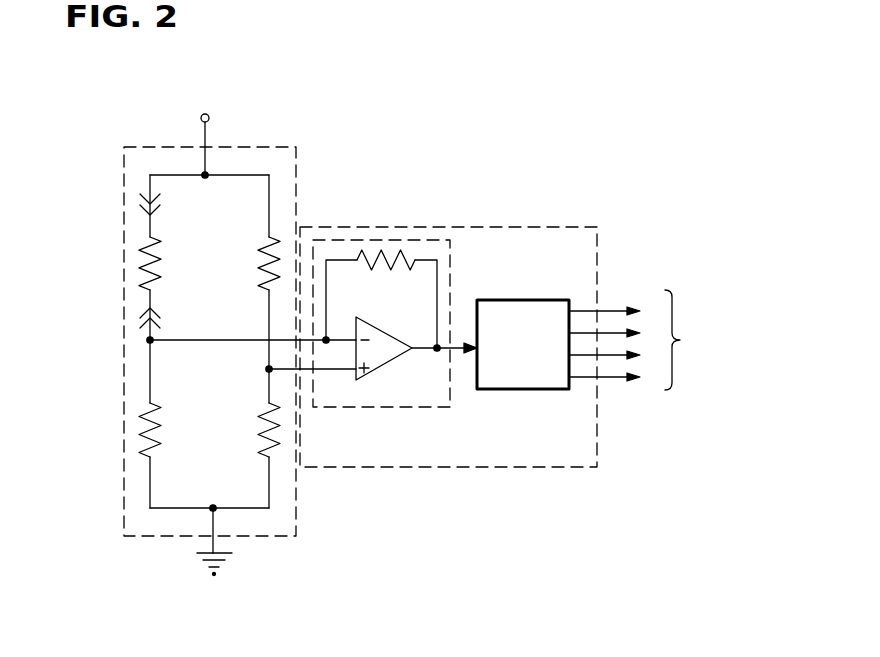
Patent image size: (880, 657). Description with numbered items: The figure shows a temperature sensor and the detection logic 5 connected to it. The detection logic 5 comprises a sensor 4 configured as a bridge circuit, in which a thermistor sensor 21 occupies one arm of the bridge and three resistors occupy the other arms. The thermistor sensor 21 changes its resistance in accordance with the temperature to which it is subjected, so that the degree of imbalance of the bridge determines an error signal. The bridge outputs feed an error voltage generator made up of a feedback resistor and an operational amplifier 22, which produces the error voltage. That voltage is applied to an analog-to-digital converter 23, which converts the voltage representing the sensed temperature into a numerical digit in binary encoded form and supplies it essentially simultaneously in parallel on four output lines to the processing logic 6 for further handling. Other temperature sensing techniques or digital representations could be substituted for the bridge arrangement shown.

The sensor 4 is at (205, 337).
The thermistor sensor 21 is at (106, 257).
The detection logic 5 is at (537, 223).
The operational amplifier 22 is at (456, 214).
The analog-to-digital converter 23 is at (487, 299).
The processing logic 6 is at (709, 340).